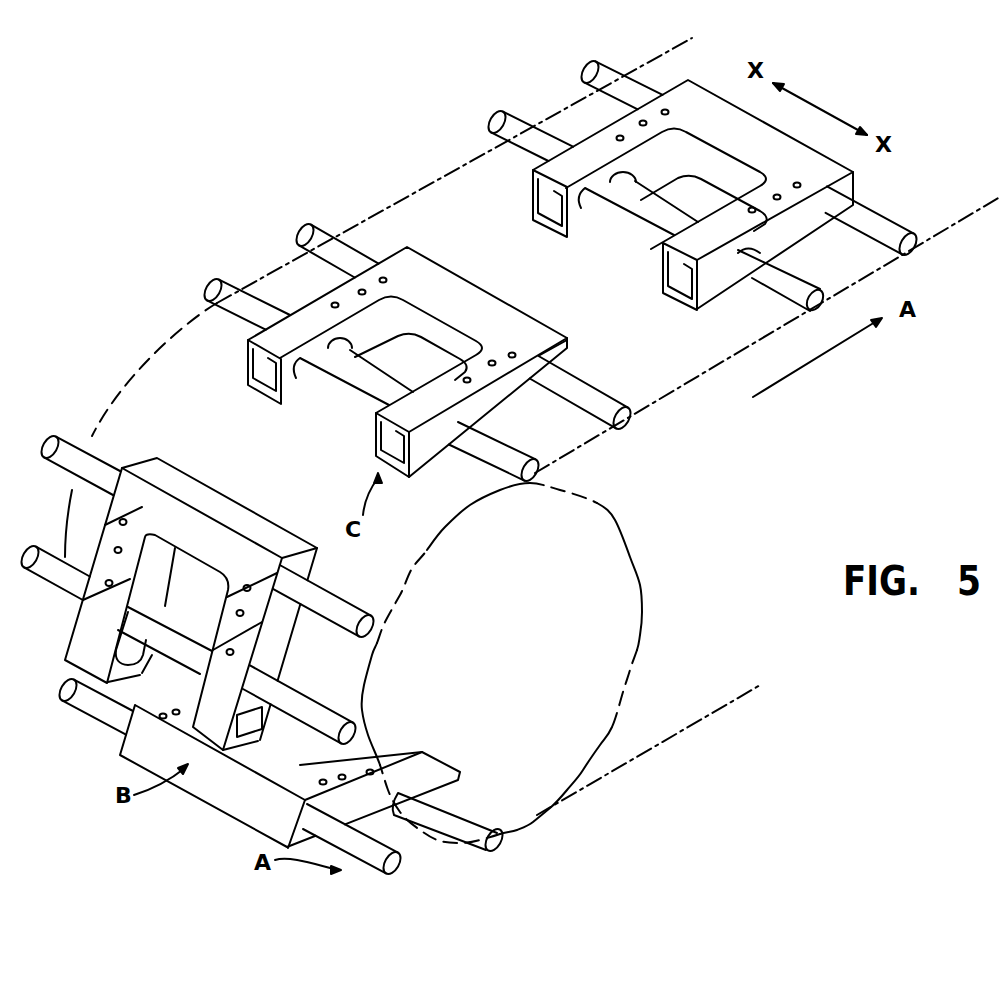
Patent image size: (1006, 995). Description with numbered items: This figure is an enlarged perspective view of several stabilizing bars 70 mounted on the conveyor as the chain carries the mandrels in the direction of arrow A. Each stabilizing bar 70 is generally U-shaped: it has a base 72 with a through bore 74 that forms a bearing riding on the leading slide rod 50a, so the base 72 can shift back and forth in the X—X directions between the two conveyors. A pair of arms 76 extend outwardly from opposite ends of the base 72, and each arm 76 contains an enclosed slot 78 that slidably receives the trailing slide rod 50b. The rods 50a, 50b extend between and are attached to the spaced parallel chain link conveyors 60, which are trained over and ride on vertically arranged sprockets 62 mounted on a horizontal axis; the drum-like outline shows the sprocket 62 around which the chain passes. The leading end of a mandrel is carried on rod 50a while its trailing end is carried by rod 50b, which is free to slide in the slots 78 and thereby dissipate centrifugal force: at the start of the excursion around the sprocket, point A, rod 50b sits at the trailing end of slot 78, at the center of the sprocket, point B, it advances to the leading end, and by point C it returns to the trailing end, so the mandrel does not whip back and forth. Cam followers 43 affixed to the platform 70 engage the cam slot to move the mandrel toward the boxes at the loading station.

The cam follower 43 is at (157, 718).
The rod 50a is at (595, 396).
The rod 50b is at (497, 450).
The chain link conveyor 60 is at (707, 370).
The sprocket 62 is at (640, 648).
The stabilizing bar 70 is at (411, 535).
The base 72 is at (486, 300).
The through bore 74 is at (570, 362).
The arm 76 is at (308, 316).
The slot means 78 is at (300, 325).